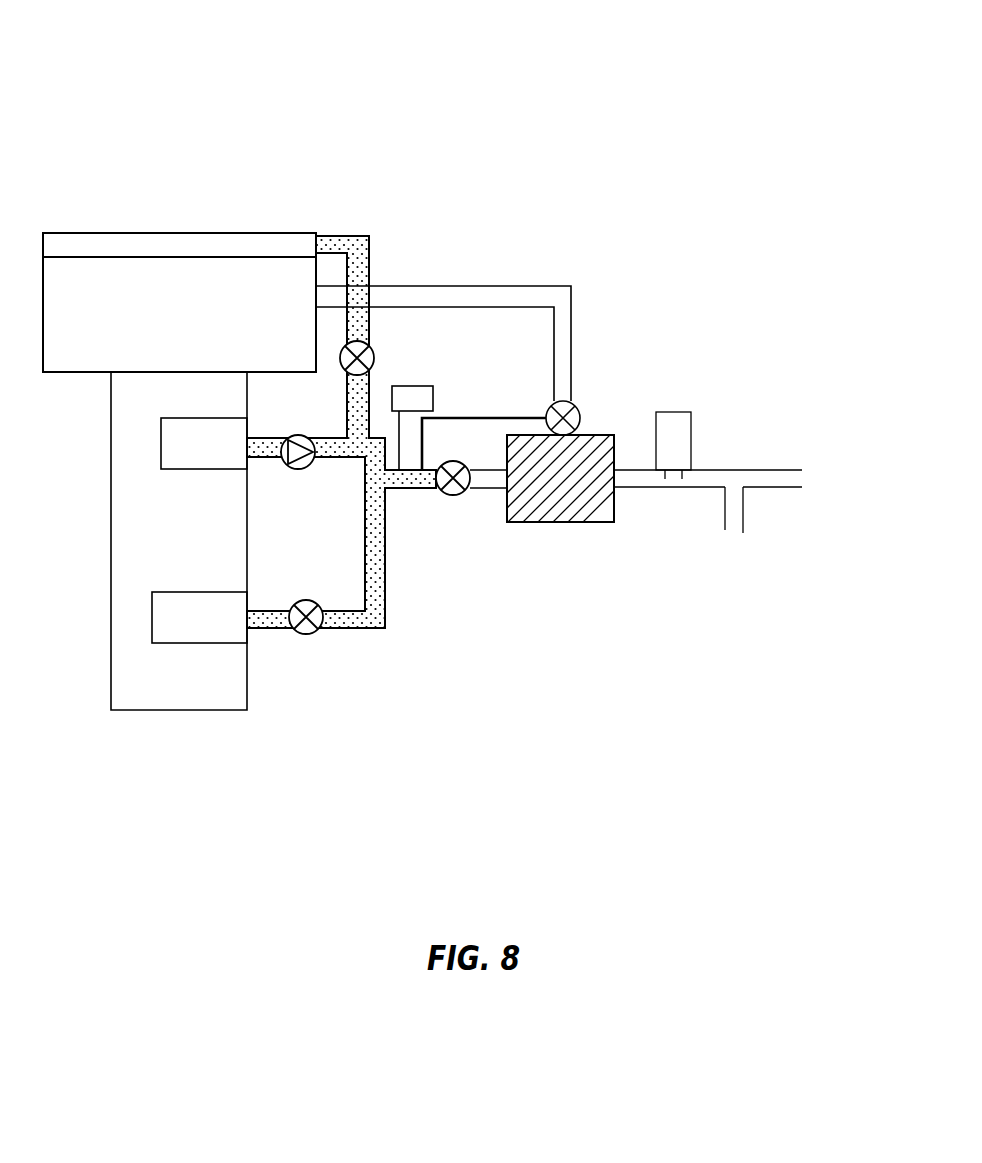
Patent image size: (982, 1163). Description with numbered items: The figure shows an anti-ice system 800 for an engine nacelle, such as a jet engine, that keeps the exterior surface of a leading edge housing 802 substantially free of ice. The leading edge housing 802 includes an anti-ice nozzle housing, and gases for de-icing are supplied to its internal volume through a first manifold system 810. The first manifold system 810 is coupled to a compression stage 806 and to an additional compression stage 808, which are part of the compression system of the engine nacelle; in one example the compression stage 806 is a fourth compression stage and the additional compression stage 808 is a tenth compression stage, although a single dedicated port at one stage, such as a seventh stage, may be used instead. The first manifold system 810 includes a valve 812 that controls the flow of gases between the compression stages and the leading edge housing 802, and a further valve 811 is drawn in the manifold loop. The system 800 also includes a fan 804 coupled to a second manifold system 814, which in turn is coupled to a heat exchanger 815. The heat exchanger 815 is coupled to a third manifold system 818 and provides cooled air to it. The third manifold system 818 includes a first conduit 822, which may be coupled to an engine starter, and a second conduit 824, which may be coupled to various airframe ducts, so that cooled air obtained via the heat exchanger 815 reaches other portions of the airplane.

The system 800 is at (738, 50).
The leading edge housing 802 is at (253, 243).
The fan 804 is at (255, 328).
The compression stage 806 is at (177, 446).
The additional compression stage 808 is at (182, 627).
The first manifold system 810 is at (371, 270).
The valve 811 is at (308, 637).
The valve 812 is at (362, 346).
The second manifold system 814 is at (477, 298).
The heat exchanger 815 is at (577, 455).
The third manifold system 818 is at (710, 482).
The first conduit 822 is at (735, 520).
The second conduit 824 is at (780, 482).